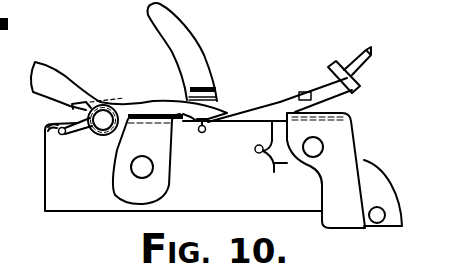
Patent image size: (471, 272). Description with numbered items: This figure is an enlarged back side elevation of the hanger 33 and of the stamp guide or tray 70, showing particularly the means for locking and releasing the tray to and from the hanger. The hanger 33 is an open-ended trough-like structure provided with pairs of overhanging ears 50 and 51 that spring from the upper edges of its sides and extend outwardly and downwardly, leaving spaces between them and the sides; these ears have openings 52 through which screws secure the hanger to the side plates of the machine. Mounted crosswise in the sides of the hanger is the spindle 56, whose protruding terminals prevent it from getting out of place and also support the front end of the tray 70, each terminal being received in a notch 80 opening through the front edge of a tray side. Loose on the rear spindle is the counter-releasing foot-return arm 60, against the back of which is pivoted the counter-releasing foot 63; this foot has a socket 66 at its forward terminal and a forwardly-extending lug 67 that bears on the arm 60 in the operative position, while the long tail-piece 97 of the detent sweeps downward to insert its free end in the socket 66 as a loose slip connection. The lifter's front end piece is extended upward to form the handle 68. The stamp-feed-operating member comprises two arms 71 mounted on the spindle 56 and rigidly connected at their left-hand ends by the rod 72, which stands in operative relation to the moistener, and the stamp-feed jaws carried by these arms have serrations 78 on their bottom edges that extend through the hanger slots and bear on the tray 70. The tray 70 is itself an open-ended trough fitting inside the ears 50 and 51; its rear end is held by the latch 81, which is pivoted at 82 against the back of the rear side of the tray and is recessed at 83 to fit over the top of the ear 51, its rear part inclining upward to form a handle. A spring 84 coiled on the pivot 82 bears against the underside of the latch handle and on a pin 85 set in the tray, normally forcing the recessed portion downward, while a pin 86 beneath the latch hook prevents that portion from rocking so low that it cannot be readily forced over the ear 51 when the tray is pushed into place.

The hanger 33 is at (279, 132).
The overhanging ears 50 is at (326, 170).
The overhanging ears 51 is at (155, 159).
The openings 52 is at (172, 187).
The spindle 56 is at (256, 153).
The counter-releasing foot-return arm 60 is at (322, 110).
The counter-releasing foot 63 is at (262, 108).
The socket 66 is at (354, 84).
The lug 67 is at (304, 92).
The handle 68 is at (193, 43).
The tray 70 is at (183, 166).
The arms 71 is at (400, 226).
The rod 72 is at (377, 223).
The serrations 78 is at (148, 100).
The notch 80 is at (270, 173).
The latch 81 is at (133, 106).
The pivot 82 is at (100, 134).
The recess 83 is at (167, 112).
The spring 84 is at (70, 131).
The pin 85 is at (47, 127).
The pin 86 is at (203, 133).
The tail-piece 97 is at (366, 57).